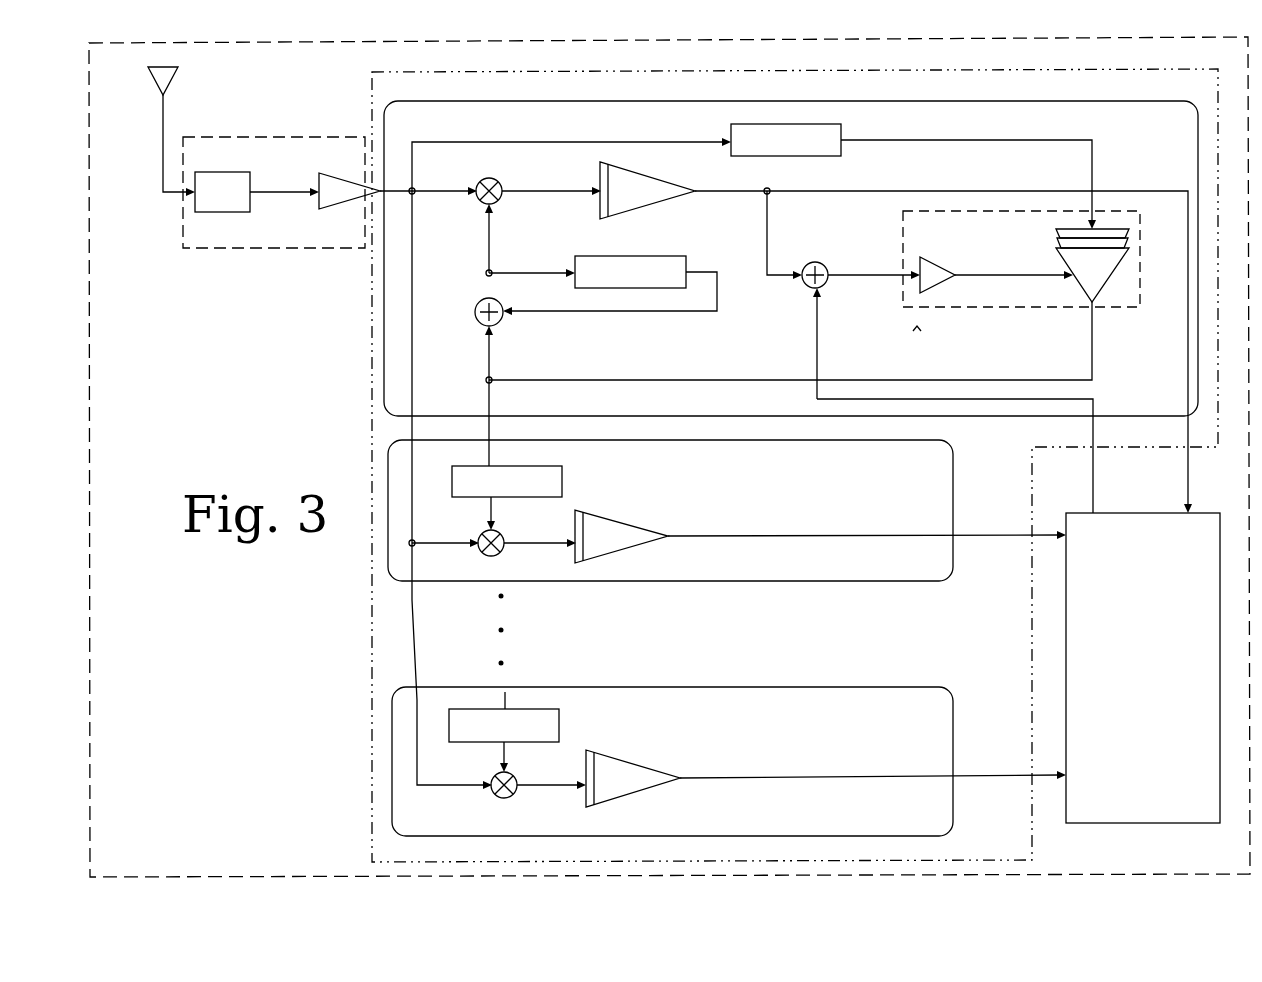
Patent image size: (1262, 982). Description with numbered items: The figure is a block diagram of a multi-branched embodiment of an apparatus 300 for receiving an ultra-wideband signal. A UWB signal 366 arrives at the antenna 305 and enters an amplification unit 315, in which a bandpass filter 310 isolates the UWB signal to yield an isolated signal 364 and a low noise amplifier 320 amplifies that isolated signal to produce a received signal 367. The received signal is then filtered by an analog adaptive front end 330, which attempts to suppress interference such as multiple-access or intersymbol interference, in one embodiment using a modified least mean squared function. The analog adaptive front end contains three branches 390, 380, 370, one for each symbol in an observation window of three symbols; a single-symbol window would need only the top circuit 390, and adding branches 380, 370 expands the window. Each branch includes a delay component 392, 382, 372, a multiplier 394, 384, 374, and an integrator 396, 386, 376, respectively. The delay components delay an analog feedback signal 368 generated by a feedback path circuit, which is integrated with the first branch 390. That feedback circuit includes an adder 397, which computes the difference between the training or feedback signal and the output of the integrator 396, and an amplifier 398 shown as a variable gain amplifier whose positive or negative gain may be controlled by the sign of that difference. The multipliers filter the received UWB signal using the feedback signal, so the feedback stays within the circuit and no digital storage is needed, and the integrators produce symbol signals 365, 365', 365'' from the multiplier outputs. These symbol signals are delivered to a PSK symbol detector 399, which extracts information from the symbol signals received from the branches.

The apparatus 300 is at (671, 457).
The antenna 305 is at (167, 70).
The bandpass filter 310 is at (222, 181).
The amplification unit 315 is at (274, 181).
The low noise amplifier 320 is at (349, 179).
The analog adaptive front end 330 is at (796, 465).
The isolated signal 364 is at (284, 223).
The symbol signal 365 is at (1224, 483).
The symbol signal 365' is at (1013, 498).
The symbol signal 365'' is at (1015, 730).
The UWB signal 366 is at (173, 178).
The received signal 367 is at (555, 463).
The analog feedback signal 368 is at (789, 384).
The branch 370 is at (672, 761).
The delay component 372 is at (508, 731).
The multiplier 374 is at (519, 773).
The integrator 376 is at (826, 775).
The branch 380 is at (670, 510).
The delay component 382 is at (507, 488).
The multiplier 384 is at (510, 531).
The integrator 386 is at (820, 533).
The branch 390 is at (791, 258).
The delay component 392 is at (792, 210).
The multiplier 394 is at (520, 224).
The integrator 396 is at (896, 333).
The adder 397 is at (930, 352).
The variable gain amplifier 398 is at (1021, 259).
The PSK symbol detector 399 is at (1144, 668).